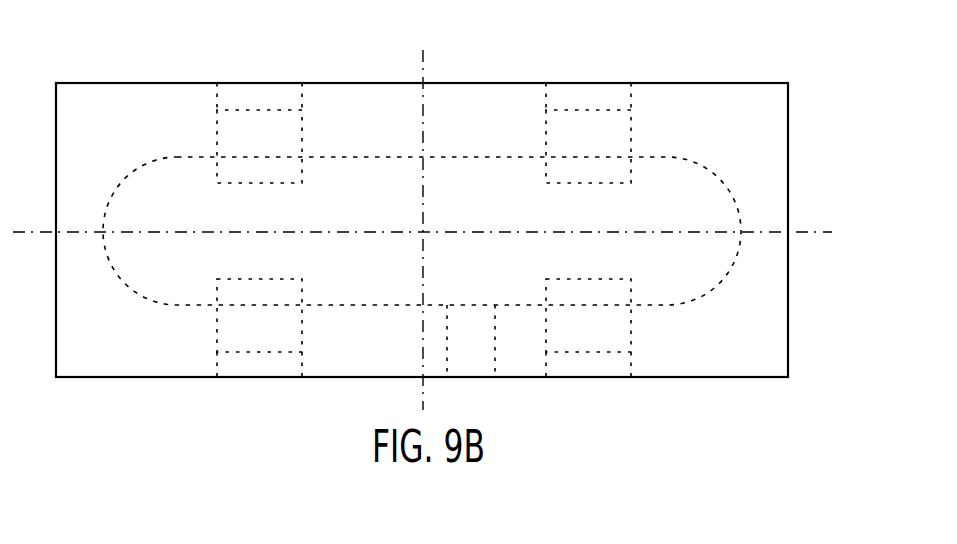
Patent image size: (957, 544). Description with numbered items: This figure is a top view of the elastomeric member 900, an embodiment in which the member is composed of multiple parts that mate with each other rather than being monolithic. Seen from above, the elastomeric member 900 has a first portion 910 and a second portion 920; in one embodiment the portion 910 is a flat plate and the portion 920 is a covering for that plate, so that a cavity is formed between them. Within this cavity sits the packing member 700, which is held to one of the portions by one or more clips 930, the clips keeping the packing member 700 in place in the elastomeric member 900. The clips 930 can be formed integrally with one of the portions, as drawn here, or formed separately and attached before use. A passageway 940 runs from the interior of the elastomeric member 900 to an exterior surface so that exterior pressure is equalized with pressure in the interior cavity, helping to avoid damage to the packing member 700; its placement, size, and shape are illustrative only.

The elastomeric member 900 is at (451, 221).
The portion 910 is at (147, 100).
The packing member 700 is at (712, 173).
The portion 920 is at (250, 367).
The clip 930 is at (292, 335).
The passageway 940 is at (495, 362).